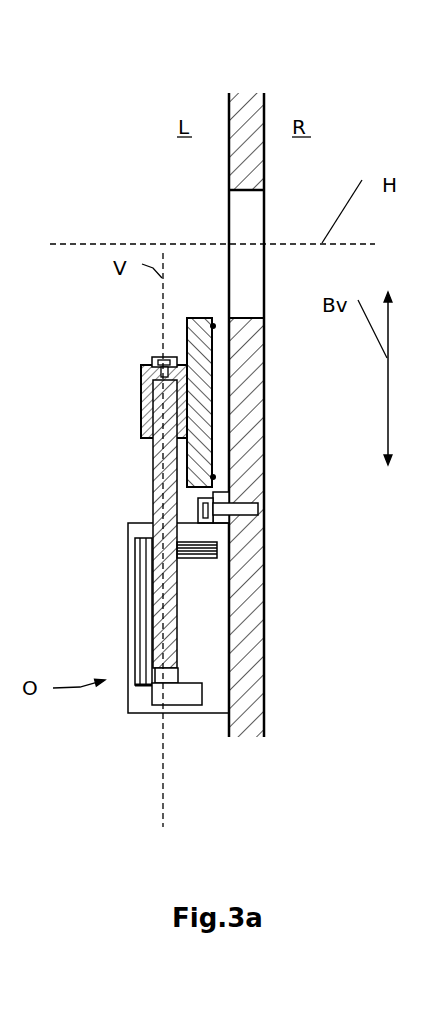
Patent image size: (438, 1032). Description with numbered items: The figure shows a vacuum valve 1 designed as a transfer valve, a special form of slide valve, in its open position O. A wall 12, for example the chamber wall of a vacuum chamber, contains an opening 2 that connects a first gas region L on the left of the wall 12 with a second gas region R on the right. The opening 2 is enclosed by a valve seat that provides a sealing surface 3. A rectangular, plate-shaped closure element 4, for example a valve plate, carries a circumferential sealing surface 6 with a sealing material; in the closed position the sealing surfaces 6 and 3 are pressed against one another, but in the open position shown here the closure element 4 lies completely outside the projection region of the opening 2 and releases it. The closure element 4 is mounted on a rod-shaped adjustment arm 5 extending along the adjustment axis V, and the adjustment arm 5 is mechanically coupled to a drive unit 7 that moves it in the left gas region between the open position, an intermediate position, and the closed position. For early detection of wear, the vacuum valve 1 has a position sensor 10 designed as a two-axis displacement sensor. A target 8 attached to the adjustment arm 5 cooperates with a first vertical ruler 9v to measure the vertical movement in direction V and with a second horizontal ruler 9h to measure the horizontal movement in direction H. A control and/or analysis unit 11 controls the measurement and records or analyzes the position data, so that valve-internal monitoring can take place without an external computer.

The vacuum valve 1 is at (181, 384).
The opening 2 is at (273, 415).
The sealing surface 3 is at (219, 312).
The closure element 4 is at (165, 392).
The adjustment arm 5 is at (141, 512).
The sealing surface 6 is at (213, 326).
The drive unit 7 is at (156, 635).
The target 8 is at (130, 660).
The first vertical ruler 9v is at (97, 609).
The second horizontal ruler 9h is at (261, 559).
The position sensor 10 is at (181, 635).
The control and/or analysis unit 11 is at (238, 705).
The wall 12 is at (276, 131).